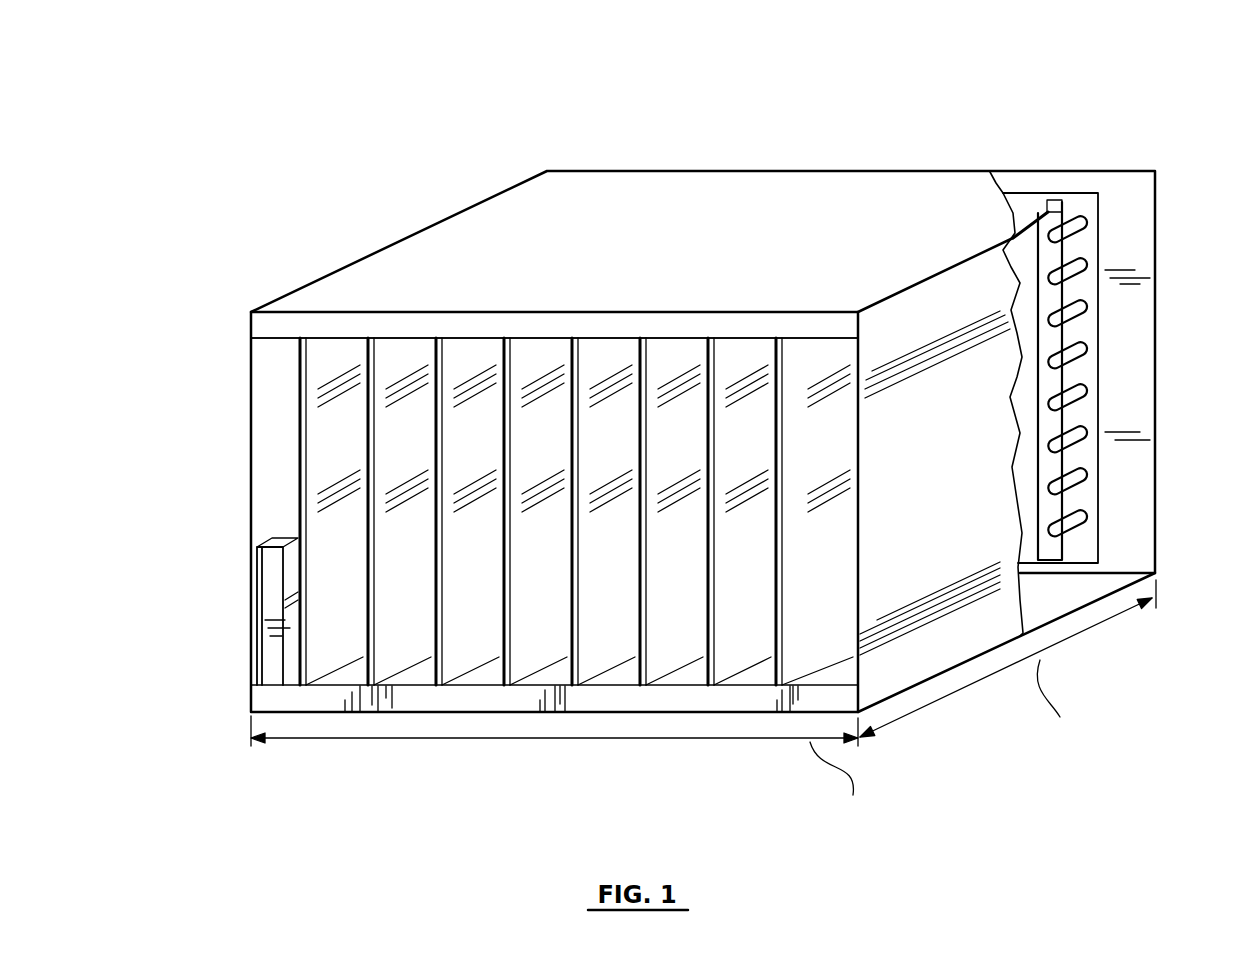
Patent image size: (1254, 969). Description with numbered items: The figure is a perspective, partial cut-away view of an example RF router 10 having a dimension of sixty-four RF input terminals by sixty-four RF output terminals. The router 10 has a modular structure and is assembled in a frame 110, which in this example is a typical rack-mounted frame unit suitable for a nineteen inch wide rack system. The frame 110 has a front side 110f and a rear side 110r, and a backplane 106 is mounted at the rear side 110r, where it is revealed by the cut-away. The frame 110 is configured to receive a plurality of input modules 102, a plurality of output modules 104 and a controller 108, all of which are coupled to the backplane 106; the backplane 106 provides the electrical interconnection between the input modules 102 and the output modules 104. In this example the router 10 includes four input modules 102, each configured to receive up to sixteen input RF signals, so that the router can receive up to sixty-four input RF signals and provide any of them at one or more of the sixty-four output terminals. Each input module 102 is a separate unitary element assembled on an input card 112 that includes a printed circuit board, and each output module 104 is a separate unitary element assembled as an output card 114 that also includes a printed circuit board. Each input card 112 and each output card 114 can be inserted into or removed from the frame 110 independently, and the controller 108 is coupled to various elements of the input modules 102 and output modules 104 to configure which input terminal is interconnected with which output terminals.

The RF router 10 is at (207, 660).
The input module 102 is at (320, 658).
The output module 104 is at (456, 658).
The backplane 106 is at (1088, 205).
The controller 108 is at (265, 598).
The frame 110 is at (858, 185).
The front side of frame 110f is at (288, 323).
The rear side of frame 110r is at (1108, 170).
The input card 112 is at (322, 375).
The output card 114 is at (540, 362).